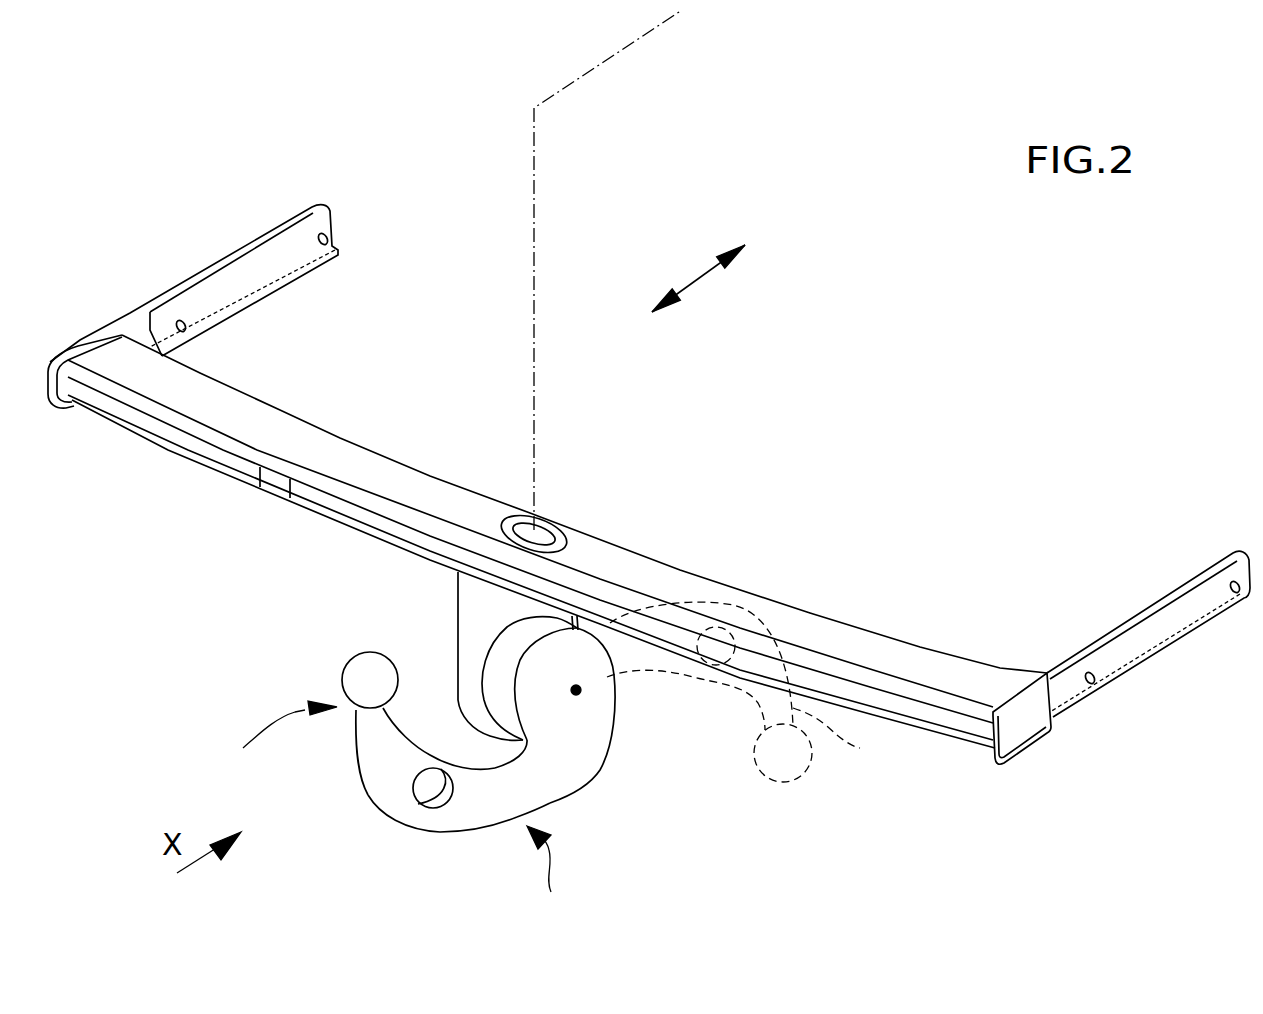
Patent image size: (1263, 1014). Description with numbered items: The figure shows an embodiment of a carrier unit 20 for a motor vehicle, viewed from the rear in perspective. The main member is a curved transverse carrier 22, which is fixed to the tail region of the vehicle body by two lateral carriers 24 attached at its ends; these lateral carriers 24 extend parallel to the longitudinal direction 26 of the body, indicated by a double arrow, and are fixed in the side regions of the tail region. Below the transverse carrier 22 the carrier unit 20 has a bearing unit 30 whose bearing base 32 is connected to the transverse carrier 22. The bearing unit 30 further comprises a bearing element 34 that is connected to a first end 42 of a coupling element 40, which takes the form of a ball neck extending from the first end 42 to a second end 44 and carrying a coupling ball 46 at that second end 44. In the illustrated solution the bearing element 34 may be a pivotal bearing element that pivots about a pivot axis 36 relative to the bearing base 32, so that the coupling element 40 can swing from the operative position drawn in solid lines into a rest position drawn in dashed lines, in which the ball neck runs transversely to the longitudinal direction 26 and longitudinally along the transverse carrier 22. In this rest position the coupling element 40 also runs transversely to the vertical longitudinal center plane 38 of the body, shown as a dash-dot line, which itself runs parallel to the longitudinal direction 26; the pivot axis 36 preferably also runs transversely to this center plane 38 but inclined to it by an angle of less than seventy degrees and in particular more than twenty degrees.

The carrier unit 20 is at (996, 634).
The transverse carrier 22 is at (646, 572).
The lateral carriers 24 is at (242, 284).
The longitudinal direction 26 is at (693, 278).
The bearing unit 30 is at (643, 657).
The bearing base 32 is at (473, 608).
The bearing element 34 is at (608, 674).
The pivot axis 36 is at (580, 690).
The vertical longitudinal center plane 38 is at (577, 126).
The coupling element 40 is at (469, 830).
The first end 42 is at (601, 645).
The second end 44 is at (366, 733).
The coupling ball 46 is at (357, 678).